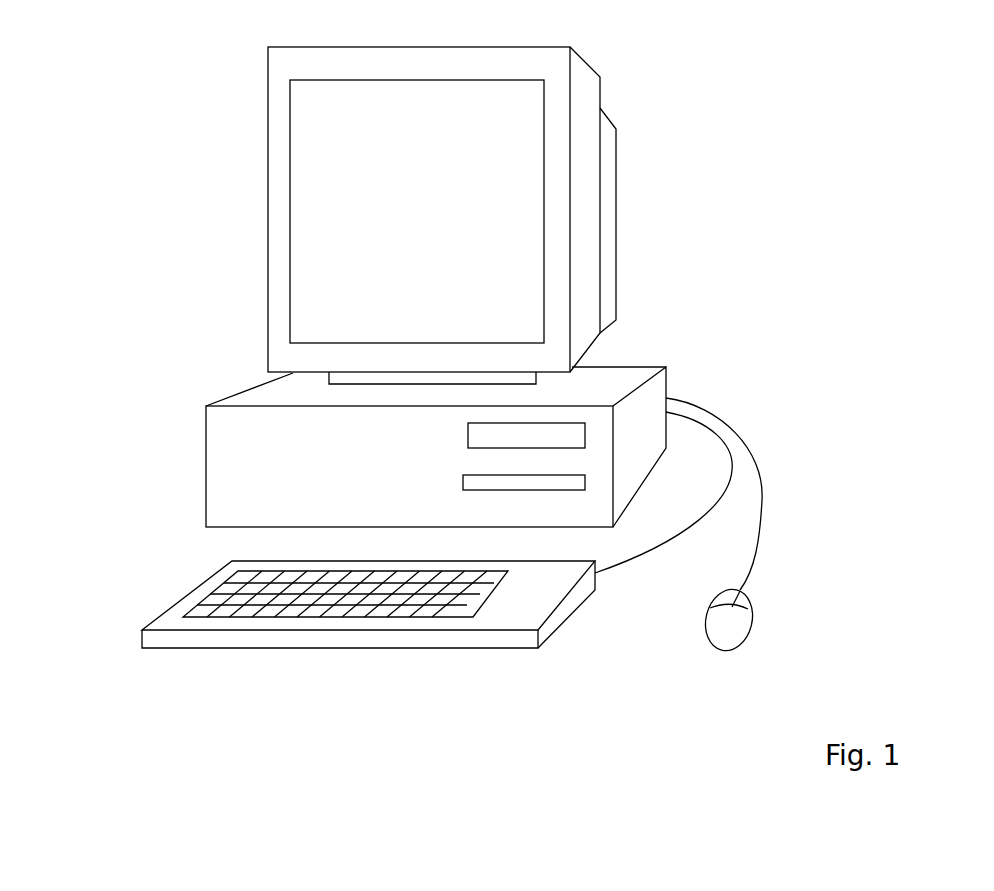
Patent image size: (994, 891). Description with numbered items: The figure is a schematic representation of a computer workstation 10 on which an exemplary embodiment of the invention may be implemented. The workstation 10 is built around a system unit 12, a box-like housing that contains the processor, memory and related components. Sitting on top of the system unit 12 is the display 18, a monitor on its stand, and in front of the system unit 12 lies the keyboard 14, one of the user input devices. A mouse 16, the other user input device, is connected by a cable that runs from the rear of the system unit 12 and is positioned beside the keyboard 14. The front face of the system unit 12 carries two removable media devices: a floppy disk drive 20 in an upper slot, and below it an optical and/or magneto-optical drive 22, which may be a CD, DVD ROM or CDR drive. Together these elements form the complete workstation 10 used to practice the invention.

The computer workstation 10 is at (682, 187).
The system unit 12 is at (206, 473).
The keyboard 14 is at (180, 597).
The mouse 16 is at (752, 630).
The display 18 is at (257, 195).
The floppy disk drive 20 is at (468, 433).
The optical and/or magneto-optical drive 22 is at (455, 483).